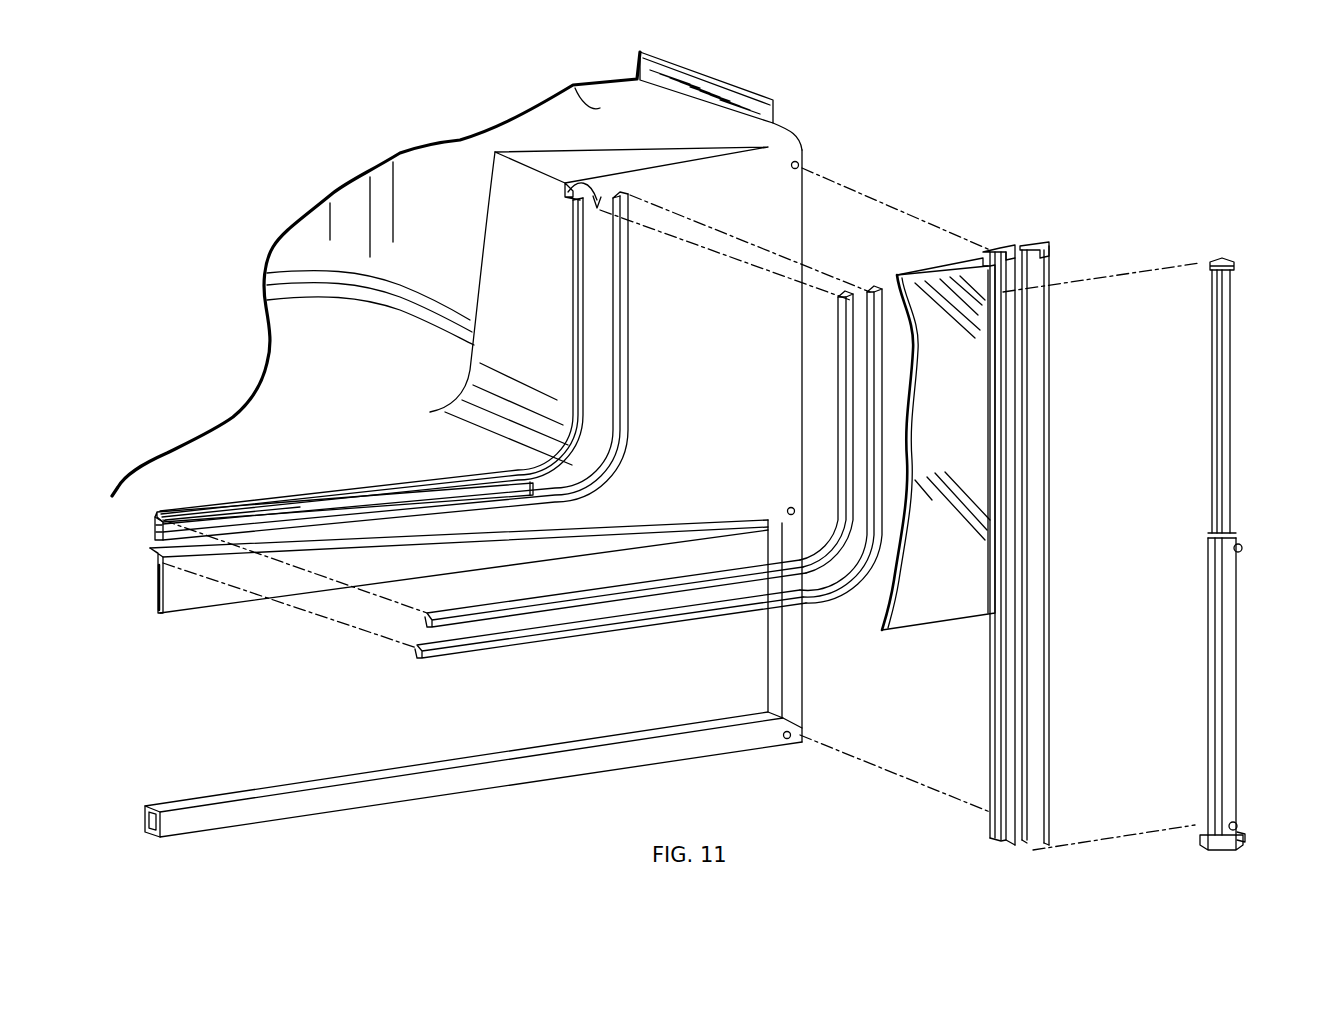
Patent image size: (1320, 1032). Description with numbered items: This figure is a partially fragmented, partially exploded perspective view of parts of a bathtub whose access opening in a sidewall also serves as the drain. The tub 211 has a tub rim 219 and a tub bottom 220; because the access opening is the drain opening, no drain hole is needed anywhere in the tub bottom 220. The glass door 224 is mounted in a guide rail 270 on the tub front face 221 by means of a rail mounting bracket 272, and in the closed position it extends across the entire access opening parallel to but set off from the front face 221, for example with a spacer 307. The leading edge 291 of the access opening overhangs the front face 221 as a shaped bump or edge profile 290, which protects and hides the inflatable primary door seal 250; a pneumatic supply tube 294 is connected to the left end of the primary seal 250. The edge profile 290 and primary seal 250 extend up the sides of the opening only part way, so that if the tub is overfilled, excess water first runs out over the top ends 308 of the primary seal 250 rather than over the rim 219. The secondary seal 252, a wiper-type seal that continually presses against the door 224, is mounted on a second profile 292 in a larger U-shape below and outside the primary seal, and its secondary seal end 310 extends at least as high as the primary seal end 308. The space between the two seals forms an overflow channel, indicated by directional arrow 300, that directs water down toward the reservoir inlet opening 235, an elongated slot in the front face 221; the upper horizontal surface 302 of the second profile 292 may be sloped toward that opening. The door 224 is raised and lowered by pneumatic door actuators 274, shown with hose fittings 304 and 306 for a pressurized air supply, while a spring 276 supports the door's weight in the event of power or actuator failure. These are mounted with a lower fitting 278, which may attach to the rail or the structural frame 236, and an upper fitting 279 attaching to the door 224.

The tub 211 is at (440, 167).
The tub rim 219 is at (700, 120).
The tub bottom 220 is at (345, 384).
The front face 221 is at (772, 482).
The door 224 is at (964, 562).
The reservoir inlet opening 235 is at (423, 507).
The structural frame 236 is at (797, 678).
The primary door seal 250 is at (430, 628).
The secondary seal 252 is at (418, 660).
The guide rail 270 is at (1007, 557).
The rail mounting bracket 272 is at (1033, 487).
The door actuator 274 is at (1230, 712).
The spring 276 is at (1213, 770).
The lower fitting 278 is at (1218, 847).
The upper fitting 279 is at (1226, 264).
The edge profile 290 is at (580, 302).
The leading edge 291 is at (244, 503).
The second profile 292 is at (630, 237).
The pneumatic supply tube 294 is at (313, 475).
The directional arrow 300 is at (563, 193).
The upper horizontal surface 302 is at (155, 545).
The hose fitting 304 is at (1242, 548).
The hose fitting 306 is at (1237, 827).
The spacer 307 is at (990, 253).
The primary seal end 308 is at (840, 293).
The secondary seal end 310 is at (861, 290).